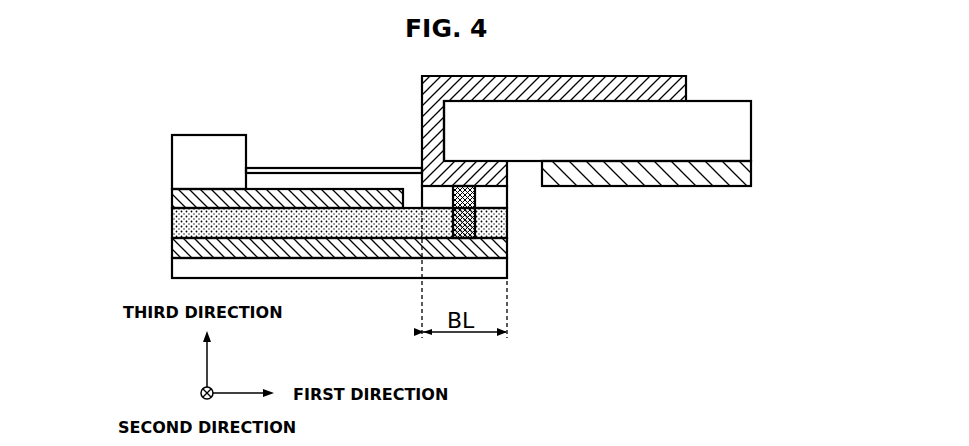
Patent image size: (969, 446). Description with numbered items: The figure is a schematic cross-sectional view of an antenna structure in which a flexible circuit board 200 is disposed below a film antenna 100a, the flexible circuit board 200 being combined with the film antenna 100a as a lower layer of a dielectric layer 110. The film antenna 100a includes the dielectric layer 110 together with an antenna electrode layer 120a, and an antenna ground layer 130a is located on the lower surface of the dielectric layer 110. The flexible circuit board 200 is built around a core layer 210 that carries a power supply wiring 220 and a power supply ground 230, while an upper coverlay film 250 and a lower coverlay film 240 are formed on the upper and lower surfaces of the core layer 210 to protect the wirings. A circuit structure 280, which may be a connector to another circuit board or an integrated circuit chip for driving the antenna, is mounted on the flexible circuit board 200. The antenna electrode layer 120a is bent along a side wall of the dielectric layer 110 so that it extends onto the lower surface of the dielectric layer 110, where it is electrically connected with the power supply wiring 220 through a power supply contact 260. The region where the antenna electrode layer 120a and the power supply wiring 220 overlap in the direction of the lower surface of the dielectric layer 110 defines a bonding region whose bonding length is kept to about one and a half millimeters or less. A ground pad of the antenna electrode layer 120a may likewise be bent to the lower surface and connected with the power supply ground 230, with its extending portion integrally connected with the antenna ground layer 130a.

The film antenna 100a is at (849, 81).
The dielectric layer 110 is at (751, 128).
The antenna electrode layer 120a is at (686, 83).
The antenna ground layer 130a is at (751, 172).
The flexible circuit board 200 is at (87, 168).
The core layer 210 is at (172, 224).
The power supply wiring 220 is at (172, 248).
The power supply ground 230 is at (172, 199).
The lower coverlay film 240 is at (172, 272).
The upper coverlay film 250 is at (246, 172).
The power supply contact 260 is at (478, 221).
The circuit structure 280 is at (207, 148).